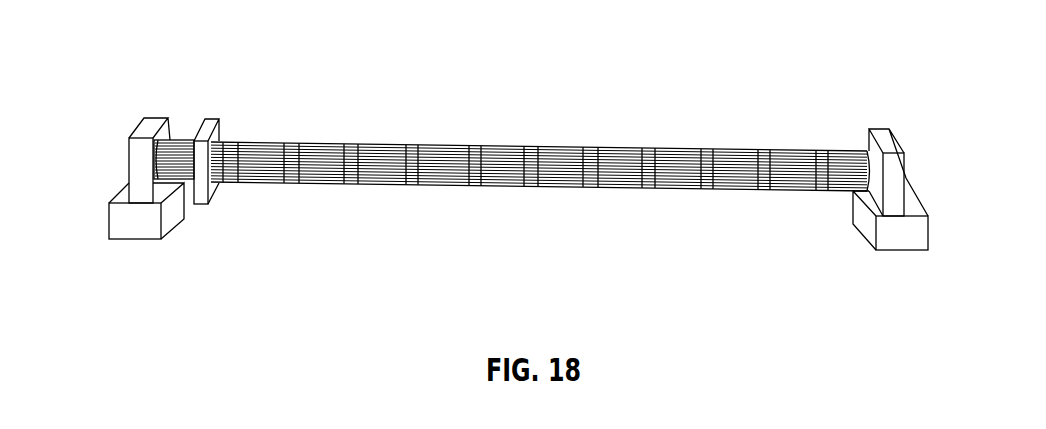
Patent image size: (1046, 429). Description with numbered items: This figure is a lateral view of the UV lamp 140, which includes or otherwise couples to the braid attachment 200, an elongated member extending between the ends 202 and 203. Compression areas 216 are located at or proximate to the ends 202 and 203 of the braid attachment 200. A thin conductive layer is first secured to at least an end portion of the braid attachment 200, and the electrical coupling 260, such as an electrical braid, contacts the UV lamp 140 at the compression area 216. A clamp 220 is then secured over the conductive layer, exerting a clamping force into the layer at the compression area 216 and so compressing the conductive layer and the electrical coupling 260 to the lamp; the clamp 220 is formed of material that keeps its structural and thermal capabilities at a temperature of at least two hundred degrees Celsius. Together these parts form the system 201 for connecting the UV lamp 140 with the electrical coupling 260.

The UV lamp 140 is at (202, 56).
The braid attachment 200 is at (523, 145).
The system 201 is at (158, 100).
The end 202 is at (185, 188).
The end 203 is at (877, 212).
The compression area 216 is at (217, 186).
The clamp 220 is at (209, 130).
The electrical coupling 260 is at (162, 163).